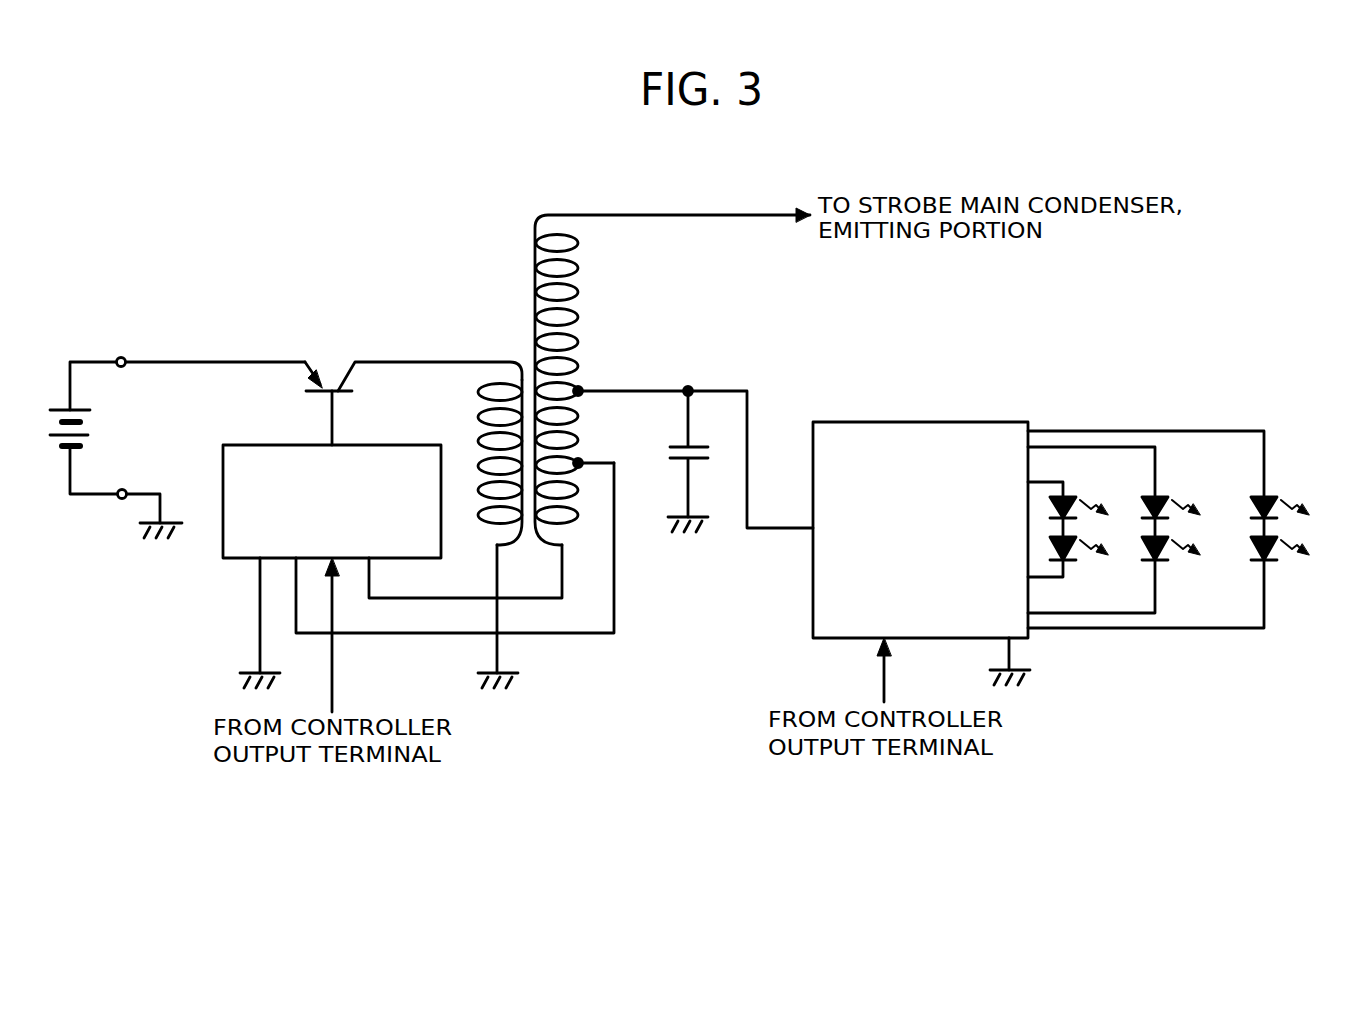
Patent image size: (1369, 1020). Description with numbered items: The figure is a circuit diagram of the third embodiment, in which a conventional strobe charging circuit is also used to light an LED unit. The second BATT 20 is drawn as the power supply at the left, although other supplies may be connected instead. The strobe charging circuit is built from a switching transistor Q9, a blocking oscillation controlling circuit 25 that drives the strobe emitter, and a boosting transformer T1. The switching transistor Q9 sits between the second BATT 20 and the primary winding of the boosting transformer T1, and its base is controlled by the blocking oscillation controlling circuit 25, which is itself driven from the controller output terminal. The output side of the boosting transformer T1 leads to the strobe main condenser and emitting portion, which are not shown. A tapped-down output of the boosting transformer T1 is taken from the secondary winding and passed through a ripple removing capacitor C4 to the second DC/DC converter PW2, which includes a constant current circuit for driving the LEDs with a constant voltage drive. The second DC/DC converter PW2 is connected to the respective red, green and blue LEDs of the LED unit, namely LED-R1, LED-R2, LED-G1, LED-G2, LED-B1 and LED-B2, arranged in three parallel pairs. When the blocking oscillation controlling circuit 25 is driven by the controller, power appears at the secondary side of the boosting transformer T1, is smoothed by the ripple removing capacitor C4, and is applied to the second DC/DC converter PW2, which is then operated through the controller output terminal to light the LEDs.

The second BATT 20 is at (106, 440).
The blocking oscillation controlling circuit 25 is at (405, 445).
The switching transistor Q9 is at (413, 390).
The boosting transformer T1 is at (644, 376).
The ripple removing capacitor C4 is at (672, 461).
The second DC/DC converter PW2 is at (920, 530).
The red LED R1 LED-R1 is at (1077, 486).
The red LED R2 LED-R2 is at (1077, 574).
The green LED G1 LED-G1 is at (1196, 486).
The green LED G2 LED-G2 is at (1197, 574).
The blue LED B1 LED-B1 is at (1304, 486).
The blue LED B2 LED-B2 is at (1305, 574).